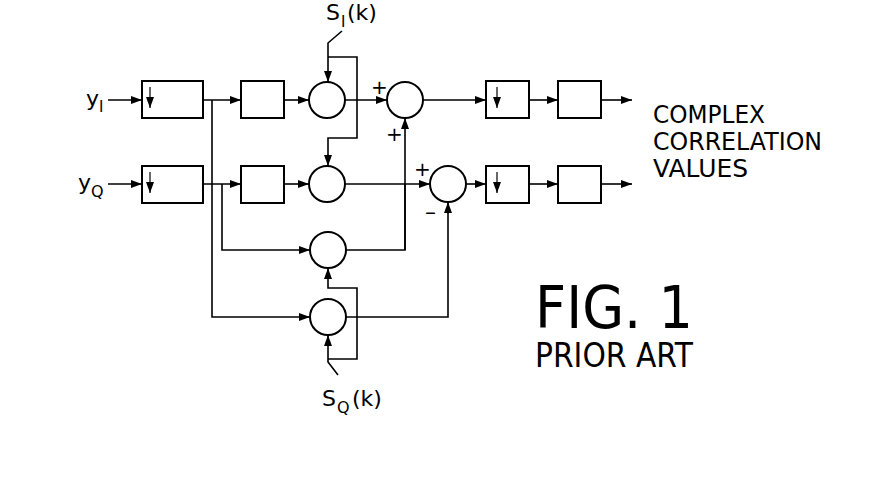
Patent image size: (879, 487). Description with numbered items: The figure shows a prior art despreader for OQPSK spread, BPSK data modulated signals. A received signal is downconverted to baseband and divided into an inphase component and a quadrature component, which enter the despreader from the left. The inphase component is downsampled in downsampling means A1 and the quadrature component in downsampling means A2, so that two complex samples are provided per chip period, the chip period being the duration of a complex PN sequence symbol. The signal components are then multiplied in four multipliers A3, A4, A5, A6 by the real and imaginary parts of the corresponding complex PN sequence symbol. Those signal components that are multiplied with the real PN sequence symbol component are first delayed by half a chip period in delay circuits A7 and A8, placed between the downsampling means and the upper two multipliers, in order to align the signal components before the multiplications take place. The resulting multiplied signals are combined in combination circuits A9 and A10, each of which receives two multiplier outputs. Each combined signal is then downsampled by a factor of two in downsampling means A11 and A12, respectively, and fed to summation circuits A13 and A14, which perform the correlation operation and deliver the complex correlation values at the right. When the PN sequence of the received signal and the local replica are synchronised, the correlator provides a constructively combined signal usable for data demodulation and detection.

The downsampling means A1 is at (178, 80).
The downsampling means A2 is at (175, 206).
The multiplier A3 is at (316, 88).
The multiplier A4 is at (316, 172).
The multiplier A5 is at (315, 237).
The multiplier A6 is at (315, 303).
The delay circuit A7 is at (253, 80).
The delay circuit A8 is at (253, 165).
The combination circuit A9 is at (418, 82).
The combination circuit A10 is at (448, 166).
The downsampling means A11 is at (497, 80).
The downsampling means A12 is at (497, 165).
The summation circuit A13 is at (569, 80).
The summation circuit A14 is at (569, 165).